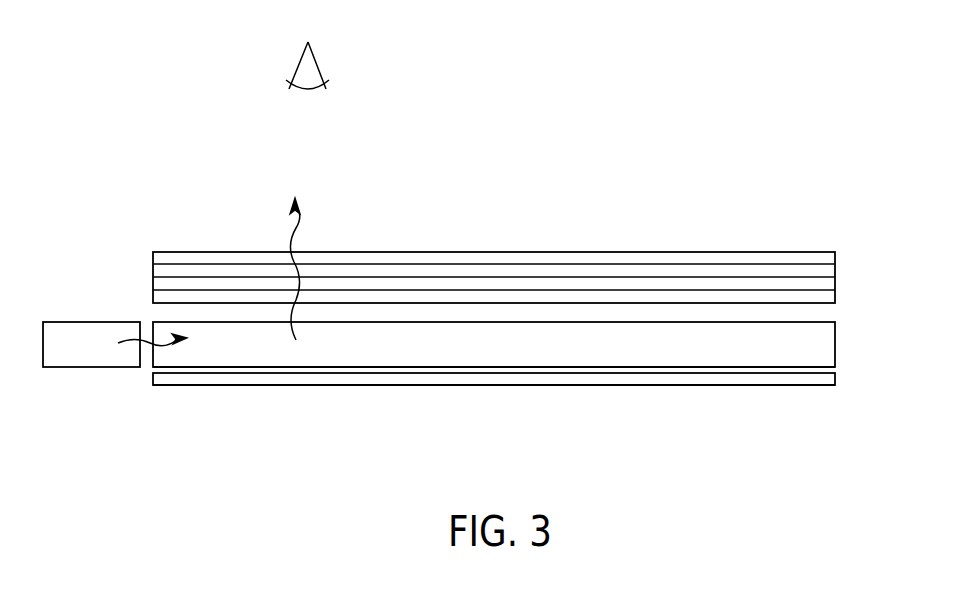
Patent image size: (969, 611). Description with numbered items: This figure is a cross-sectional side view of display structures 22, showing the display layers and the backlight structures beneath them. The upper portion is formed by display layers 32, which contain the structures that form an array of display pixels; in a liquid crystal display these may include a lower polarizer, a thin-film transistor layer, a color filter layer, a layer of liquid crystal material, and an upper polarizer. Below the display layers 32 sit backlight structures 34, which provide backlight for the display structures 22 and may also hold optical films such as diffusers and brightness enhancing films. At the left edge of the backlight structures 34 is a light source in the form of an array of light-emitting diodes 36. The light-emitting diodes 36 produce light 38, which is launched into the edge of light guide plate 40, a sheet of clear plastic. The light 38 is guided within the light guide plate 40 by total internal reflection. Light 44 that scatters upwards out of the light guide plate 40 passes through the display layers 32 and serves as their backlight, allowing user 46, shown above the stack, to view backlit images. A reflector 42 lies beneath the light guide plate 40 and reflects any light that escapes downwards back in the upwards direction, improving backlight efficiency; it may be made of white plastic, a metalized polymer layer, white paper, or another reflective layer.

The display structures 22 is at (766, 166).
The display layers 32 is at (848, 248).
The backlight structures 34 is at (848, 320).
The light-emitting diodes 36 is at (88, 367).
The light 38 is at (168, 343).
The light guide plate 40 is at (260, 343).
The reflector 42 is at (370, 385).
The light 44 is at (292, 224).
The user 46 is at (318, 62).